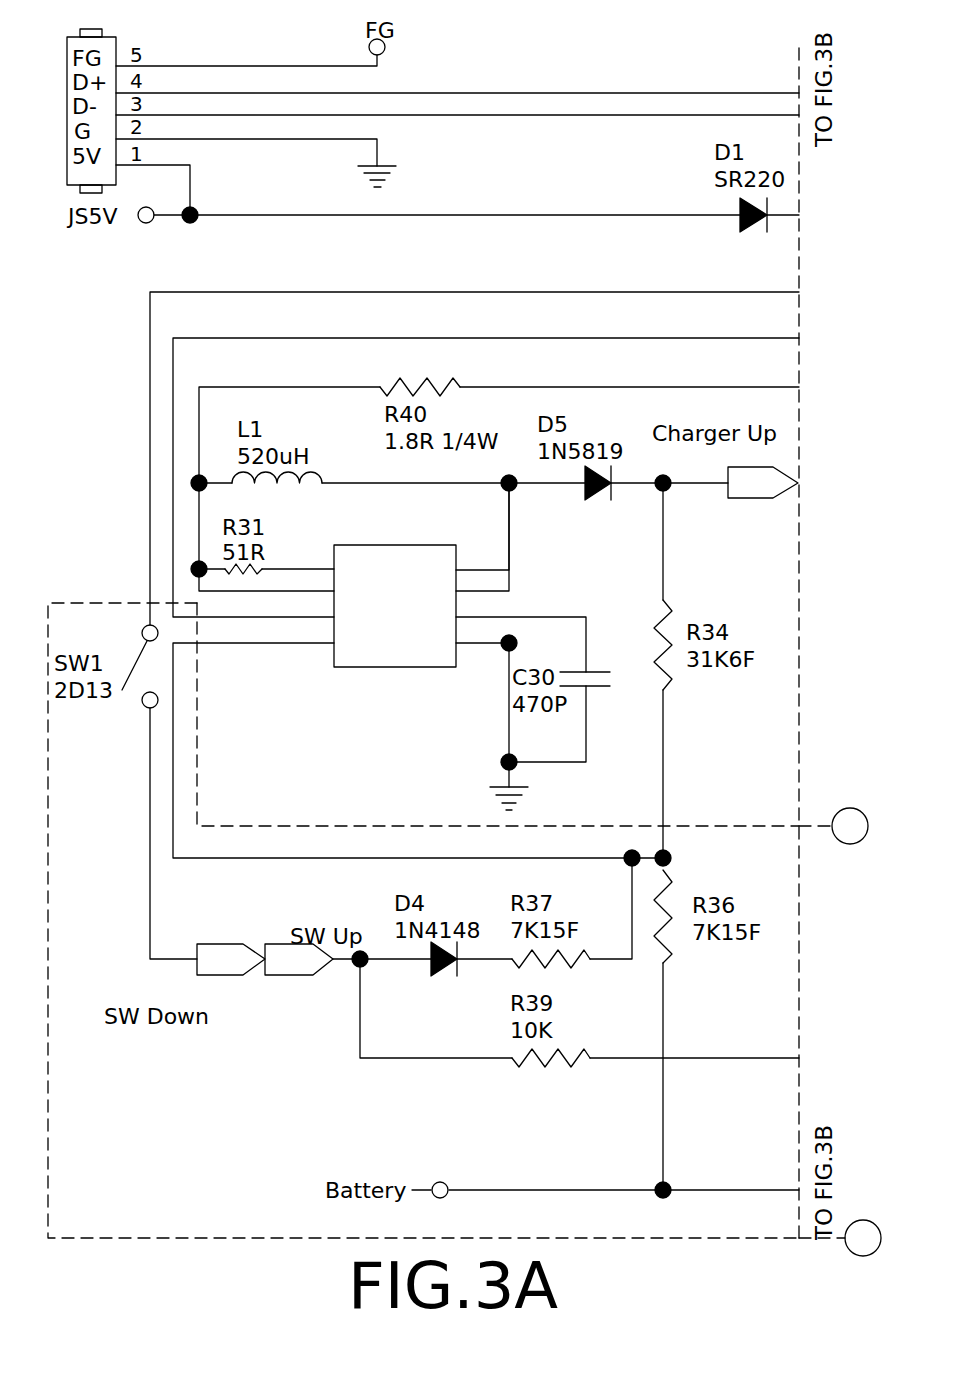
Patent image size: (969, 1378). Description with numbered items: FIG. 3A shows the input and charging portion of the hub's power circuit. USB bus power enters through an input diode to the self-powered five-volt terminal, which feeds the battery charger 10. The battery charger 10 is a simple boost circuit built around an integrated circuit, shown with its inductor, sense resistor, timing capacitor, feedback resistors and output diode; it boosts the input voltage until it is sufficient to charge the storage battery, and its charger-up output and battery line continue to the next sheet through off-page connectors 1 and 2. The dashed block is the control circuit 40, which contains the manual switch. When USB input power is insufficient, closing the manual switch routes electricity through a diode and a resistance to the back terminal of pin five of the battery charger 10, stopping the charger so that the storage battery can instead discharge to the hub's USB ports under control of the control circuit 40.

The battery charger 10 is at (411, 551).
The control circuit 40 is at (157, 1225).
The off-page connector 1 to FIG. 3B 1 is at (833, 826).
The off-page connector 2 to FIG. 3B 2 is at (840, 1238).